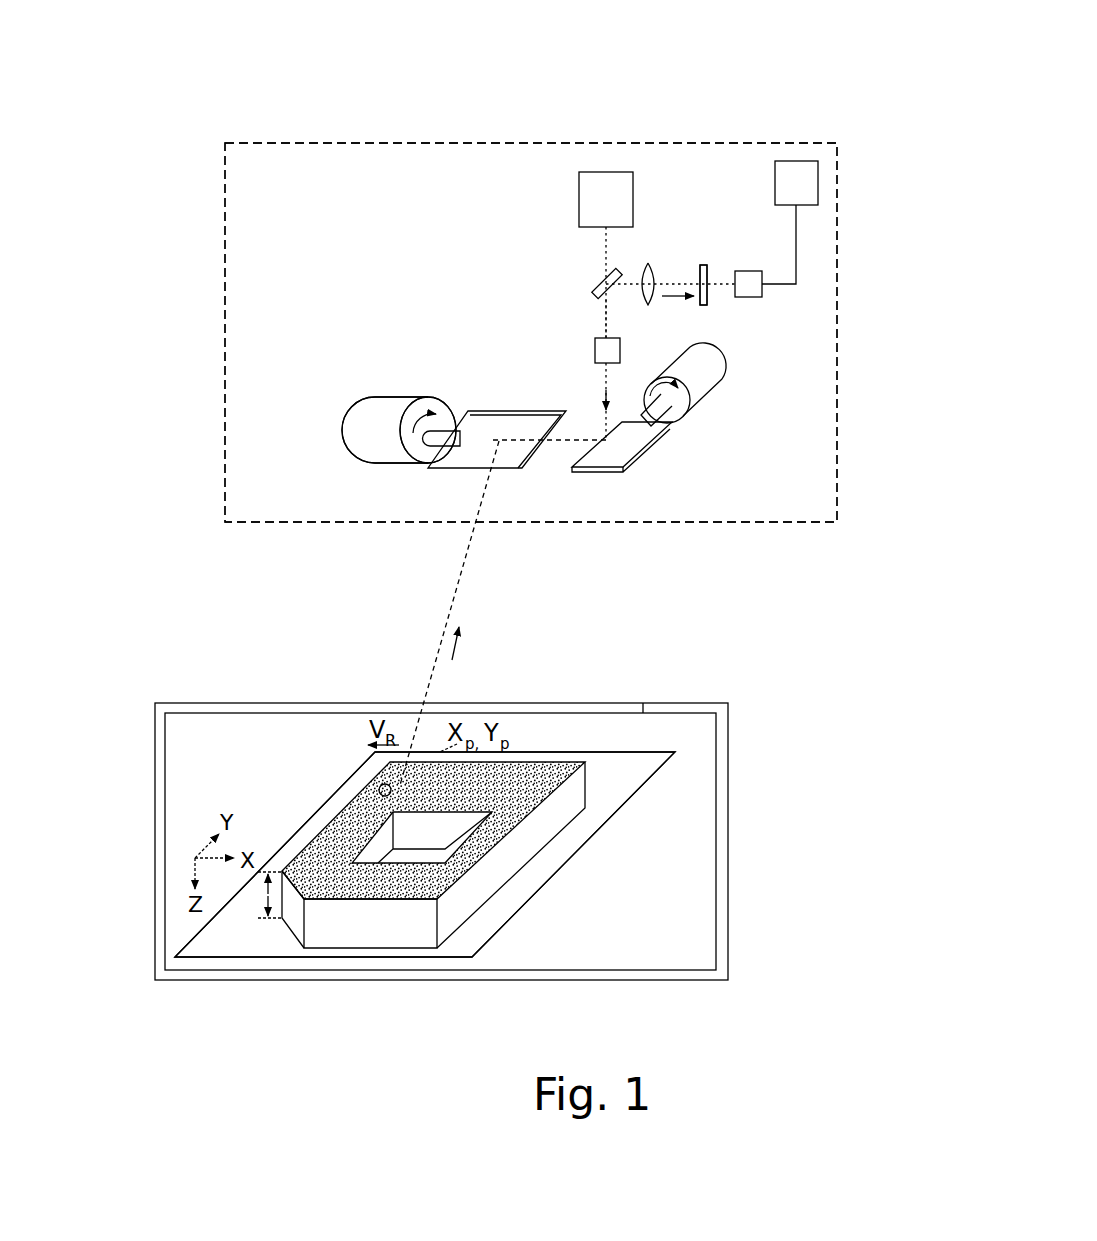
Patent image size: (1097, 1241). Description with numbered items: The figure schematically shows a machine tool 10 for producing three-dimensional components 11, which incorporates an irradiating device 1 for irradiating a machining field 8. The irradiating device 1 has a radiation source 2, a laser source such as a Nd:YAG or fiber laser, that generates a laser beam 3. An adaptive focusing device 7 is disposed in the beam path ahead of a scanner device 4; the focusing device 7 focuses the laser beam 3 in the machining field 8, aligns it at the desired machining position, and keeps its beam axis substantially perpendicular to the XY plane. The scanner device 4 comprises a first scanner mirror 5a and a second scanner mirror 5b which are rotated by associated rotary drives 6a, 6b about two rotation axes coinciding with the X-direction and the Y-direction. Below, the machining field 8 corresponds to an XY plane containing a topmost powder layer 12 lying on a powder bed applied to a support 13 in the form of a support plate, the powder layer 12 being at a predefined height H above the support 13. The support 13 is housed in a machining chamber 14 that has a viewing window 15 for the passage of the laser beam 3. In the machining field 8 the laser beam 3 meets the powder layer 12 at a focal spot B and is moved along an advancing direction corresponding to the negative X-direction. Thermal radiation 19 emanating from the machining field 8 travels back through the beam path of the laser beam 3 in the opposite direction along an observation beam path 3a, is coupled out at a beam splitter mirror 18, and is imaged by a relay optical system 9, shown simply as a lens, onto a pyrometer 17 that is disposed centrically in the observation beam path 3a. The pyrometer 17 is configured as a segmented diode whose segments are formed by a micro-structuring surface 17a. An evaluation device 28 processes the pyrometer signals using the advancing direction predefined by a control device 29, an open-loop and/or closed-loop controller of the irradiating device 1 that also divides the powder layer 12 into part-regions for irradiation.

The irradiating device 1 is at (838, 176).
The radiation source 2 is at (593, 197).
The laser beam 3 is at (597, 388).
The observation beam path 3a is at (602, 322).
The scanner device 4 is at (336, 383).
The first scanner mirror 5a is at (617, 451).
The second scanner mirror 5b is at (494, 432).
The rotary drive 6a is at (695, 383).
The rotary drive 6b is at (392, 407).
The focusing device 7 is at (596, 351).
The machining field 8 is at (301, 784).
The relay optical system 9 is at (648, 262).
The machine tool 10 is at (703, 122).
The three-dimensional component 11 is at (368, 930).
The powder layer 12 is at (572, 762).
The support 13 is at (535, 872).
The machining chamber 14 is at (155, 775).
The viewing window 15 is at (525, 703).
The pyrometer 17 is at (704, 272).
The micro-structuring surface 17a is at (700, 270).
The beam splitter mirror 18 is at (603, 279).
The thermal radiation 19 is at (675, 300).
The evaluation device 28 is at (753, 293).
The control device 29 is at (800, 172).
The focal spot B is at (367, 793).
The height H is at (263, 895).